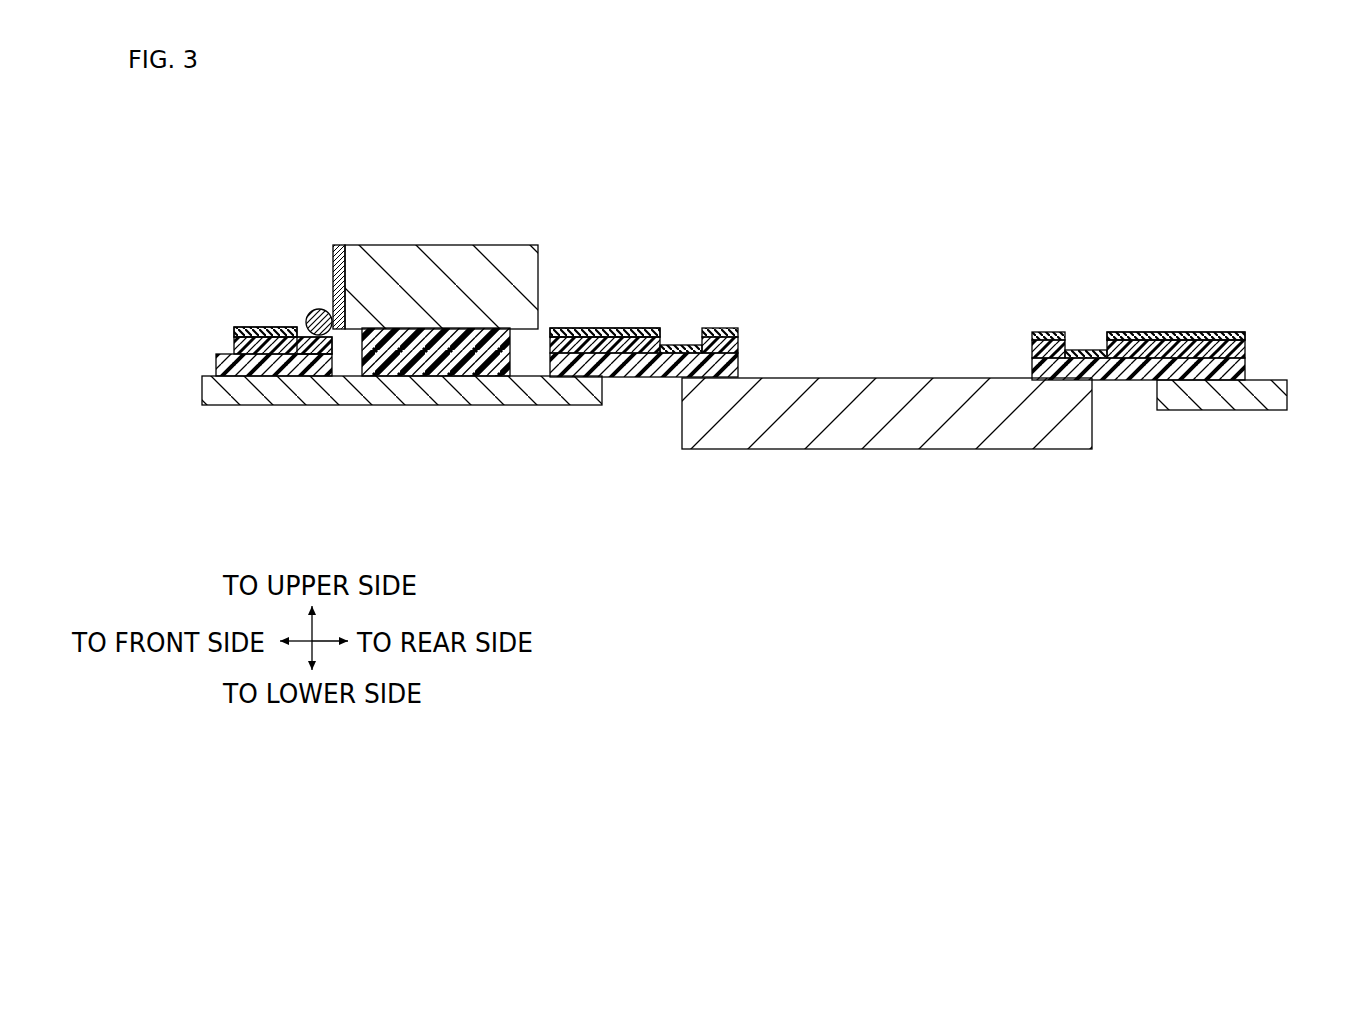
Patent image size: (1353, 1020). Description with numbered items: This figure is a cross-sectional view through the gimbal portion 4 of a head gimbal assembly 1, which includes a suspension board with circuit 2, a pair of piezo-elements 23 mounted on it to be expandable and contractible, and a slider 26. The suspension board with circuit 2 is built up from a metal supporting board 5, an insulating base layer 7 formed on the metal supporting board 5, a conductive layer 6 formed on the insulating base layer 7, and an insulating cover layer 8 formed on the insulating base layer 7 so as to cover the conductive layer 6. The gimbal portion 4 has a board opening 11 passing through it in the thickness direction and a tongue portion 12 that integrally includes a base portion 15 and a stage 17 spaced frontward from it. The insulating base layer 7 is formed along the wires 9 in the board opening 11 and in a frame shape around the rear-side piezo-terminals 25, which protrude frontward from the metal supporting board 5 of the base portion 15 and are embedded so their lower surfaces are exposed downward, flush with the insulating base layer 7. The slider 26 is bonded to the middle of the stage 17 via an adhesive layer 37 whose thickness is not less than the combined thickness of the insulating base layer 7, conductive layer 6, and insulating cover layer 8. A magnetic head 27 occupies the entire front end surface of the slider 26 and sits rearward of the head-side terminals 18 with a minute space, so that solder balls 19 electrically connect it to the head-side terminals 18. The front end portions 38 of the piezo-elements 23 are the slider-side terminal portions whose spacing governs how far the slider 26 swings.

The head gimbal assembly 1 is at (1222, 298).
The suspension board with circuit 2 is at (853, 630).
The gimbal portion 4 is at (738, 508).
The metal supporting board 5 is at (202, 390).
The conductive layer 6 is at (235, 344).
The insulating base layer 7 is at (216, 364).
The insulating cover layer 8 is at (235, 337).
The wires 9 is at (257, 336).
The board opening 11 is at (1157, 400).
The tongue portion 12 is at (429, 412).
The base portion 15 is at (1252, 410).
The stage 17 is at (555, 407).
The head-side terminals 18 is at (303, 337).
The solder balls 19 is at (318, 308).
The piezo-elements 23 is at (834, 450).
The rear-side piezo-terminals 25 is at (1107, 380).
The slider 26 is at (427, 245).
The magnetic head 27 is at (333, 250).
The adhesive layer 37 is at (358, 362).
The front end portions 38 is at (683, 418).